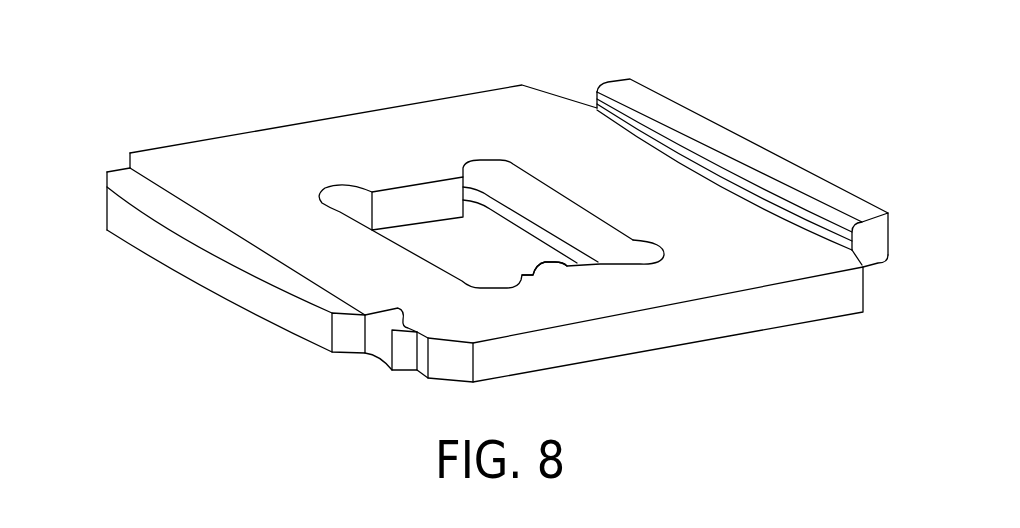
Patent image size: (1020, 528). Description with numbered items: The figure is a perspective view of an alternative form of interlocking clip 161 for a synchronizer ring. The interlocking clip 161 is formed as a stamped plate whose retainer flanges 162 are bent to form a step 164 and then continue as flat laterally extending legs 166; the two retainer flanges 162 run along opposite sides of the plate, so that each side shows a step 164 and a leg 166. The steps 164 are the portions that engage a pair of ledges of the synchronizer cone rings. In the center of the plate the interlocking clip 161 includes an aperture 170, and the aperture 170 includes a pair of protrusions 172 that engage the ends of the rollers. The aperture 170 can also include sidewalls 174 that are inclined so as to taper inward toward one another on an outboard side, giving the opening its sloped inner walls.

The interlocking clip 161 is at (359, 56).
The retainer flange 162 is at (270, 267).
The step 164 is at (350, 278).
The flat laterally extending leg 166 is at (187, 219).
The aperture 170 is at (470, 248).
The protrusion 172 is at (417, 202).
The sidewall 174 is at (580, 227).